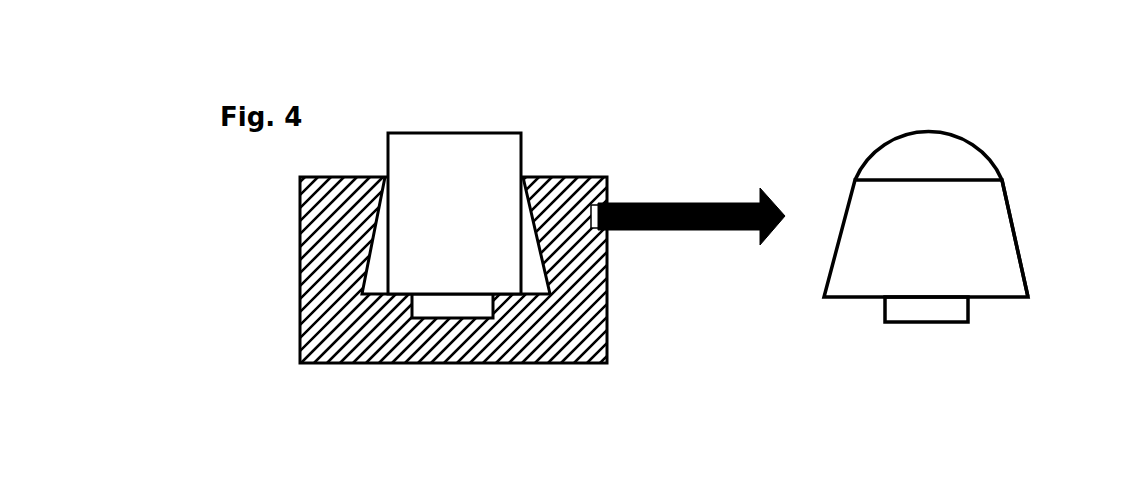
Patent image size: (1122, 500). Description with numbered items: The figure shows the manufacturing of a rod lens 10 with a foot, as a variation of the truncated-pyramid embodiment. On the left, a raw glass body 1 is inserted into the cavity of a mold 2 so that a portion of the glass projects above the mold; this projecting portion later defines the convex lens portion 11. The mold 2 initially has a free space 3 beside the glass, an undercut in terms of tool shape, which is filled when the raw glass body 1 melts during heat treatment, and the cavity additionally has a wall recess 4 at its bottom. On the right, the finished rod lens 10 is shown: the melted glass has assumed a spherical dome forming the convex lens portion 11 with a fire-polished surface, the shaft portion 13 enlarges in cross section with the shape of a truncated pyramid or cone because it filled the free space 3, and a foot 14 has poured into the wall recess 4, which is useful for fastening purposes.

The raw glass body 1 is at (425, 157).
The mold 2 is at (340, 222).
The free space 3 is at (532, 272).
The wall recess 4 is at (460, 305).
The rod lens 10 is at (912, 218).
The convex lens portion 11 is at (917, 157).
The shaft portion 13 is at (998, 270).
The foot 14 is at (943, 310).